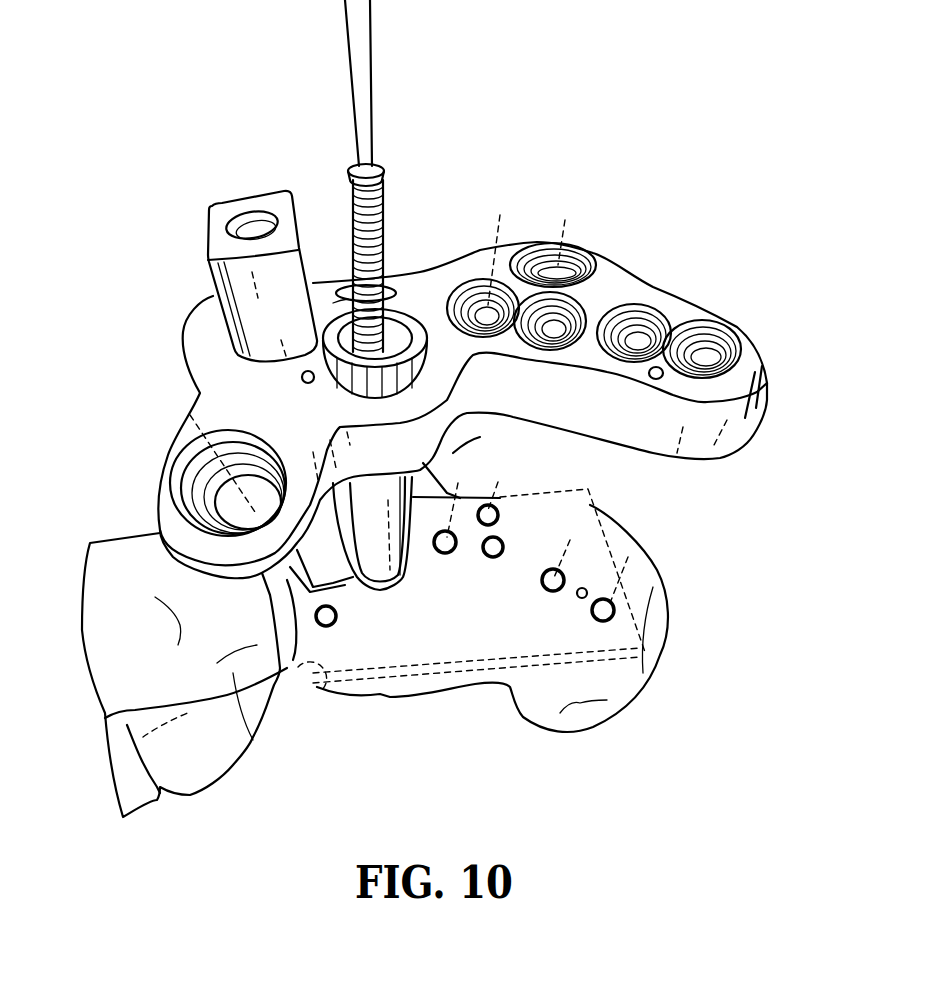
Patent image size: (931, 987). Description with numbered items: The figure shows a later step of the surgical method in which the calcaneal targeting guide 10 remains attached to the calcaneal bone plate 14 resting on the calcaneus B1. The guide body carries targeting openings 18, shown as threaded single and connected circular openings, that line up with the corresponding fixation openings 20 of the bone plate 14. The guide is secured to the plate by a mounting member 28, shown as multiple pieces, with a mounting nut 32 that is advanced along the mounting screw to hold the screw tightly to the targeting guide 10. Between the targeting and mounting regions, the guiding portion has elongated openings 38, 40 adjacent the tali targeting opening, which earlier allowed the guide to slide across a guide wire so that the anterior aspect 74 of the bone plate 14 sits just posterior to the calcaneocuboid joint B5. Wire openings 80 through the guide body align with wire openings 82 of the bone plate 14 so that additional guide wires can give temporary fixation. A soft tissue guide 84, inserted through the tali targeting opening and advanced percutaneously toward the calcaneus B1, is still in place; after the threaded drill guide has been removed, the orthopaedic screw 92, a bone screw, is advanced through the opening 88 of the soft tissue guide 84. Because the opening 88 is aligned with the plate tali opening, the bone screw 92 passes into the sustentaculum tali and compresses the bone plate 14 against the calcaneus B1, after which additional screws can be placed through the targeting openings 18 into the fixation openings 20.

The calcaneal targeting guide 10 is at (465, 212).
The calcaneal bone plate 14 is at (447, 673).
The targeting openings 18 is at (723, 318).
The fixation openings 20 is at (494, 560).
The mounting member 28 is at (203, 293).
The mounting nut 32 is at (238, 200).
The elongated opening 38 is at (333, 303).
The elongated opening 40 is at (348, 290).
The anterior aspect 74 is at (293, 655).
The wire openings 80 is at (302, 379).
The wire openings 82 is at (584, 588).
The soft tissue guide 84 is at (388, 600).
The opening 88 is at (328, 390).
The orthopaedic screw 92 is at (383, 218).
The calcaneus B1 is at (653, 615).
The calcaneocuboid joint B5 is at (253, 740).